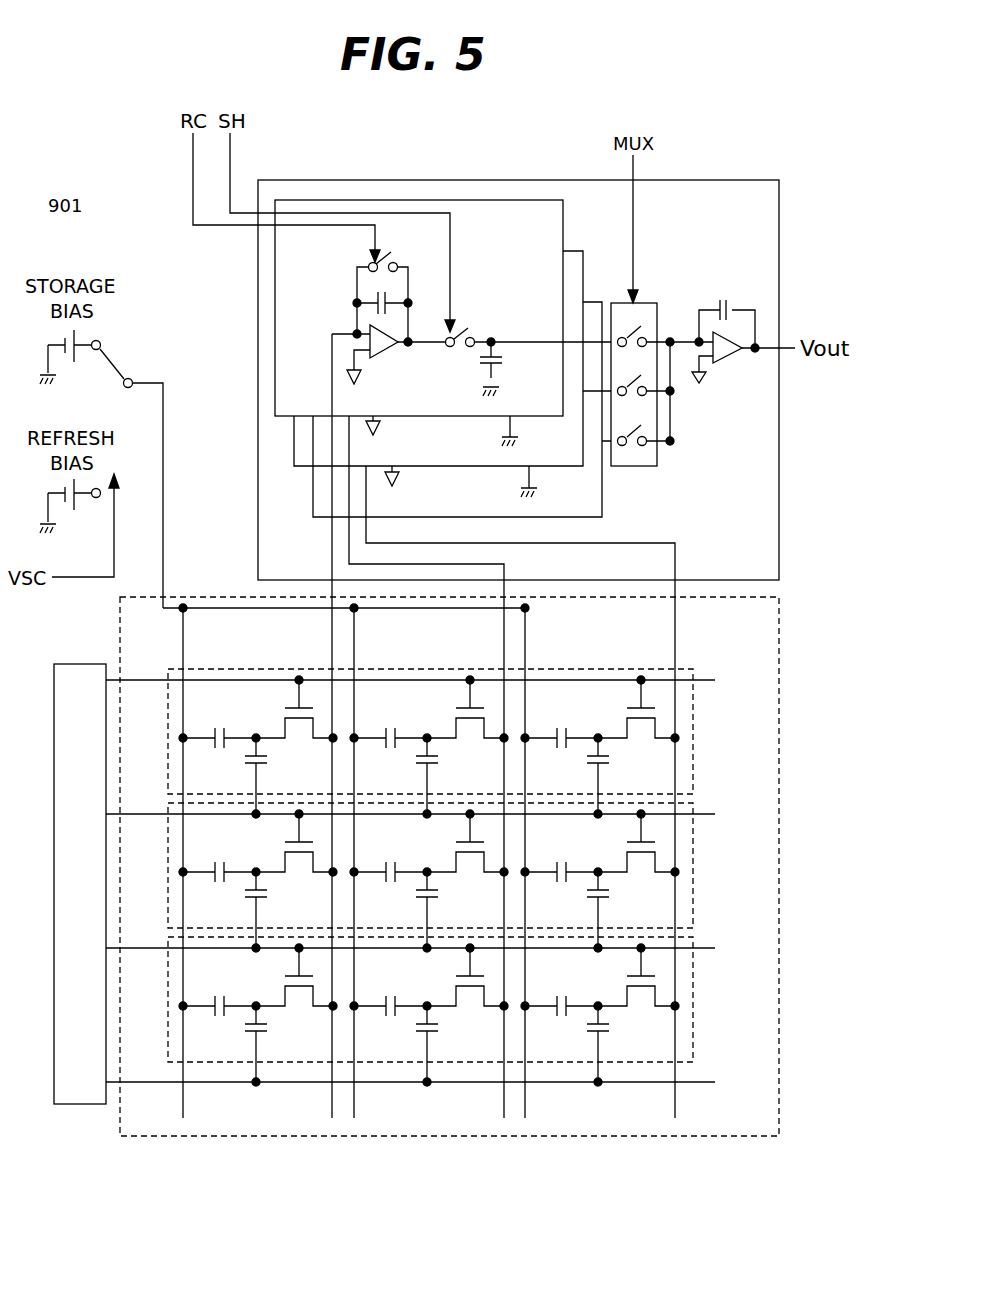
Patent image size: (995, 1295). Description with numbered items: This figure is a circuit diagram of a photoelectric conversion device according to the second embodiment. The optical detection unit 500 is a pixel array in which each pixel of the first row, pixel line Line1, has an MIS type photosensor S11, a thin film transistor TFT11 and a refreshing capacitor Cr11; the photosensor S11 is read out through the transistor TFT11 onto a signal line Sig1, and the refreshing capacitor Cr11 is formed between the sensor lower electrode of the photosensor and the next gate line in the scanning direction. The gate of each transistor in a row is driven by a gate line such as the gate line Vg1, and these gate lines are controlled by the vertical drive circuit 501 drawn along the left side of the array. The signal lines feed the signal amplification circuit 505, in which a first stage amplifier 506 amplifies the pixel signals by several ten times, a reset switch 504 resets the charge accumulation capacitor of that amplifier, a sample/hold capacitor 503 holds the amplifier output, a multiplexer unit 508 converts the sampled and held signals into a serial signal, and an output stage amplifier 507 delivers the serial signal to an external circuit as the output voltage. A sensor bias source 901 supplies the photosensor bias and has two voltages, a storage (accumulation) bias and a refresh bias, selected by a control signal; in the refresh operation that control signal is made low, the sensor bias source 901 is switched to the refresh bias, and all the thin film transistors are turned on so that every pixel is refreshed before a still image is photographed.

The optical detection unit 500 is at (628, 1138).
The vertical drive circuit 501 is at (80, 664).
The sample/hold capacitor 503 is at (496, 350).
The reset switch 504 is at (391, 258).
The signal amplification circuit 505 is at (710, 180).
The first stage amplifier 506 is at (383, 349).
The output stage amplifier 507 is at (693, 325).
The multiplexer unit 508 is at (633, 467).
The sensor bias source 901 is at (68, 266).
The MIS type photosensor S11 is at (229, 730).
The refreshing capacitor Cr11 is at (245, 762).
The thin film transistor TFT11 is at (299, 728).
The signal line Sig1 is at (333, 636).
The gate line Vg1 is at (146, 679).
The pixel line Line1 is at (693, 787).